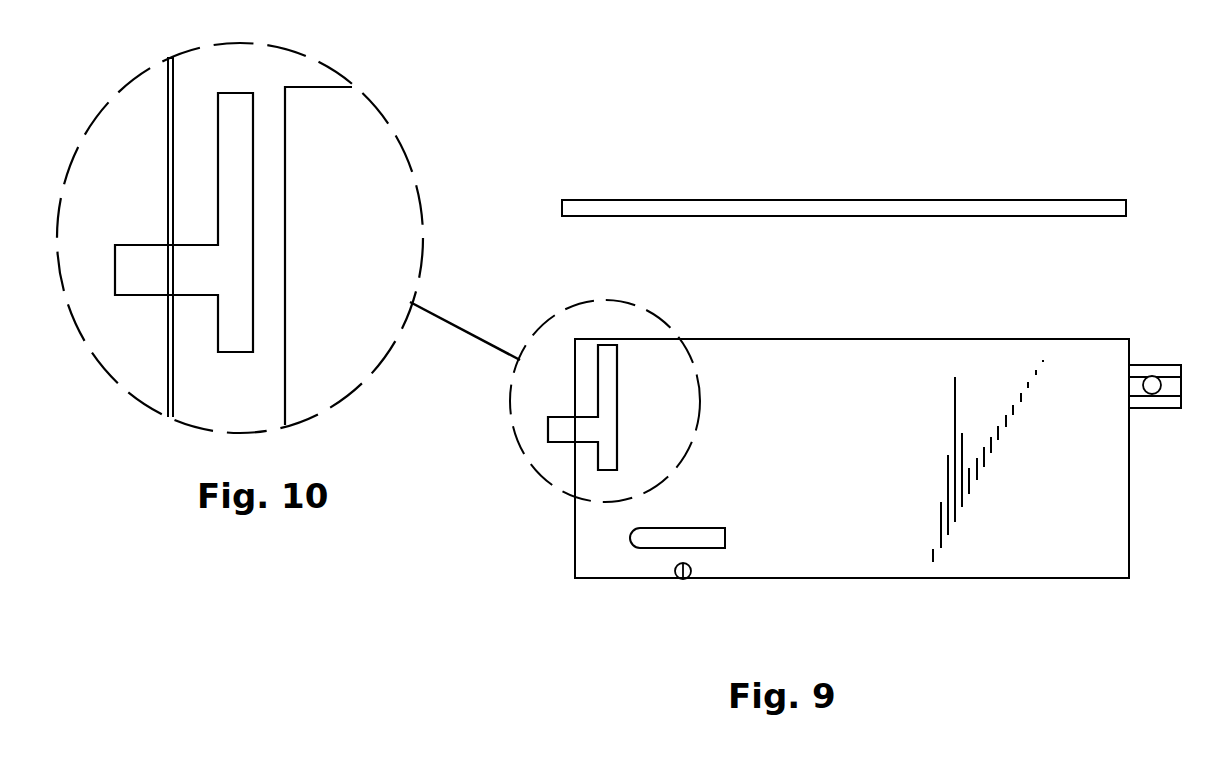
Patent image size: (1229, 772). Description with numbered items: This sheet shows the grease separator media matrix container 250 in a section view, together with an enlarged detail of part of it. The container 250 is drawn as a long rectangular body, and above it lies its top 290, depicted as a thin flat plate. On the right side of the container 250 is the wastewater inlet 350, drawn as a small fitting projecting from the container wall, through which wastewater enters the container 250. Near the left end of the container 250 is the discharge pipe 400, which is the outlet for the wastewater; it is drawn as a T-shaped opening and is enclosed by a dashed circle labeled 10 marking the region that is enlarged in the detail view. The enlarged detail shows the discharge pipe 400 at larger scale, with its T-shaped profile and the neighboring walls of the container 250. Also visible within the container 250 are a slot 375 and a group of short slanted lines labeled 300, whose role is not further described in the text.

In FIG. 9, the enlarged detail region 10 is at (562, 310).
In FIG. 9, the grease separator media matrix container 250 is at (802, 315).
In FIG. 9, the top 290 is at (795, 170).
In FIG. 9, the bristles / fibers 300 is at (964, 561).
In FIG. 9, the wastewater inlet 350 is at (1152, 394).
In FIG. 9, the slot 375 is at (668, 533).
In FIG. 10, the discharge pipe 400 is at (230, 237).
In FIG. 9, the discharge pipe 400 is at (562, 443).